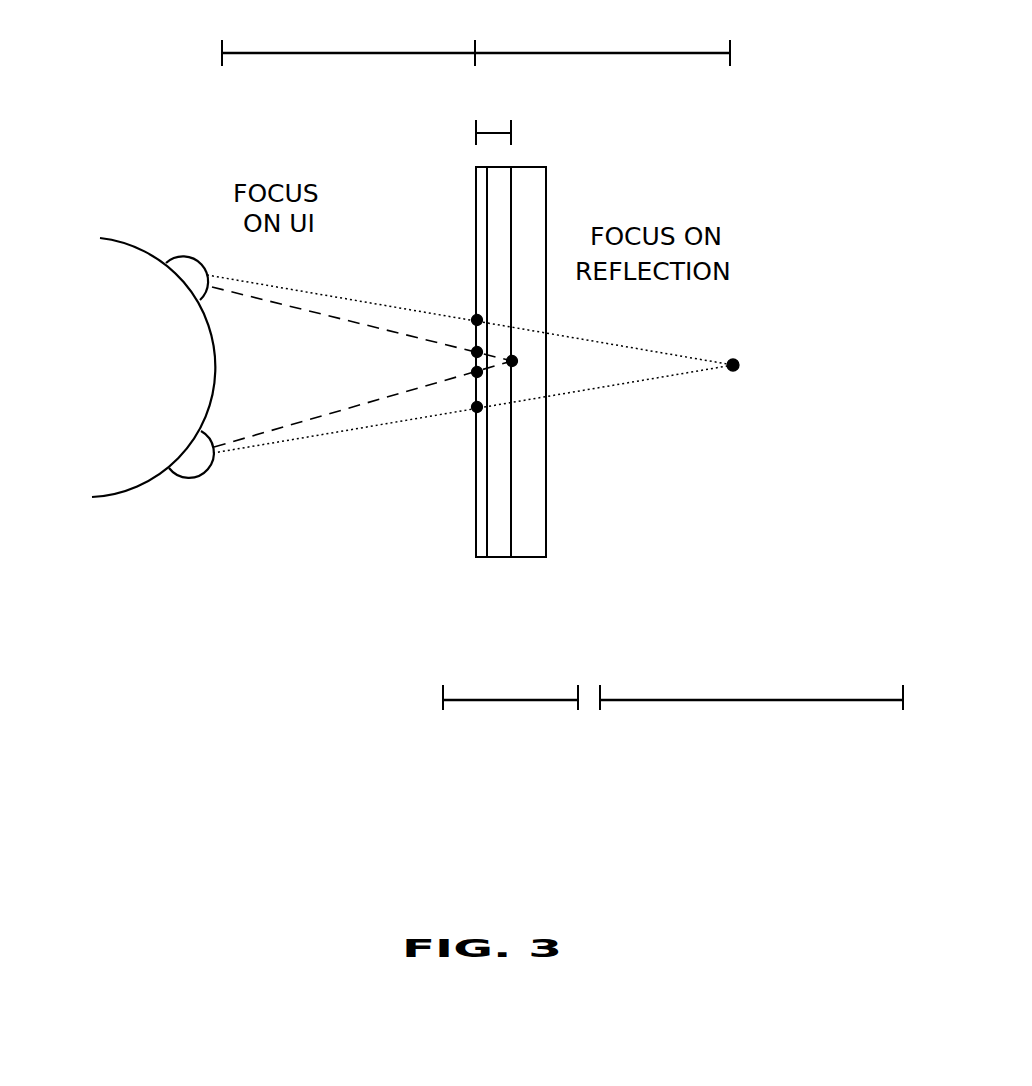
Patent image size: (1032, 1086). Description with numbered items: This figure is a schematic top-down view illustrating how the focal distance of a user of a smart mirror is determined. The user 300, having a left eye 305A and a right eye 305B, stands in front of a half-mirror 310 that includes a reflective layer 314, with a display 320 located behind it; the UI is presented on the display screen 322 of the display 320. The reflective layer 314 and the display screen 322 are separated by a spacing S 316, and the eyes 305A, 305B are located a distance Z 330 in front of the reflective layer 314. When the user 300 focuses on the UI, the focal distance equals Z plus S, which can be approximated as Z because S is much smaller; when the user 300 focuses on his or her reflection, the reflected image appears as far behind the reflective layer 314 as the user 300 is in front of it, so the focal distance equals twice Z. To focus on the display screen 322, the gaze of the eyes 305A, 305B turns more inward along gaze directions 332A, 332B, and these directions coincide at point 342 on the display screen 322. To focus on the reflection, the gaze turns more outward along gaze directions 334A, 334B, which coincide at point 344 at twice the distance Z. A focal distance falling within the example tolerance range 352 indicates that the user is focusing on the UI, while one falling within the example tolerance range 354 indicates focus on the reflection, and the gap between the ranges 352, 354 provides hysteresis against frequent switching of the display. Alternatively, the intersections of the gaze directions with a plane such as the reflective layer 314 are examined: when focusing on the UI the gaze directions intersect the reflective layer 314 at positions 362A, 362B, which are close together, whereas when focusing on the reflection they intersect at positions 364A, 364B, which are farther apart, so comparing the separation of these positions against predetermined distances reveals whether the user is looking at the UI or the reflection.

The user 300 is at (127, 367).
The left eye 305A is at (181, 257).
The right eye 305B is at (183, 478).
The half-mirror 310 is at (460, 395).
The reflective layer 314 is at (478, 532).
The spacing S 316 is at (493, 133).
The display 320 is at (527, 518).
The display screen 322 is at (517, 470).
The distance Z 330 is at (405, 54).
The gaze direction 332A is at (343, 318).
The gaze direction 332B is at (355, 405).
The gaze direction 334A is at (570, 337).
The gaze direction 334B is at (568, 393).
The point 342 is at (512, 362).
The point 344 is at (733, 370).
The tolerance range 352 is at (522, 701).
The tolerance range 354 is at (752, 701).
The position 362A is at (477, 352).
The position 362B is at (477, 372).
The position 364A is at (477, 320).
The position 364B is at (477, 407).